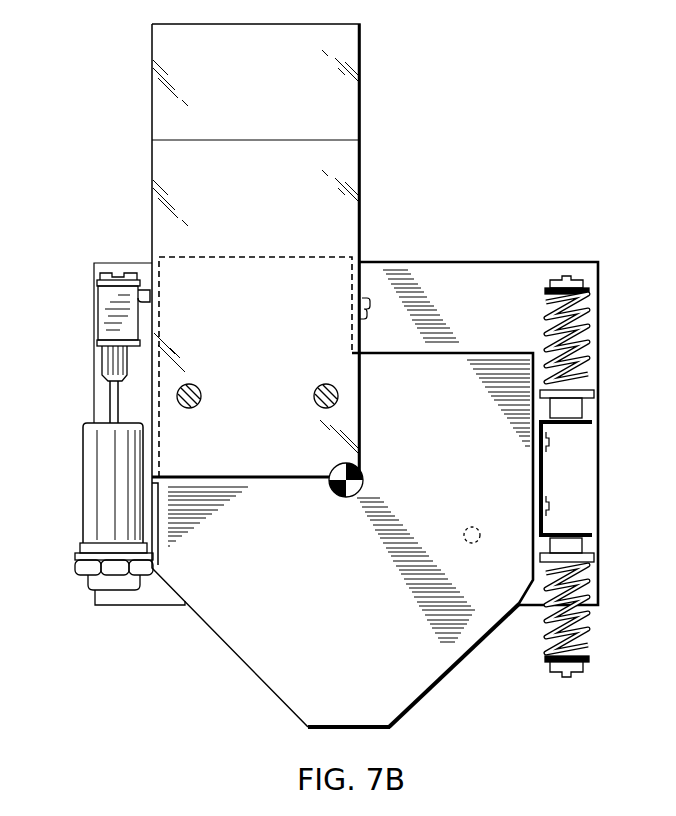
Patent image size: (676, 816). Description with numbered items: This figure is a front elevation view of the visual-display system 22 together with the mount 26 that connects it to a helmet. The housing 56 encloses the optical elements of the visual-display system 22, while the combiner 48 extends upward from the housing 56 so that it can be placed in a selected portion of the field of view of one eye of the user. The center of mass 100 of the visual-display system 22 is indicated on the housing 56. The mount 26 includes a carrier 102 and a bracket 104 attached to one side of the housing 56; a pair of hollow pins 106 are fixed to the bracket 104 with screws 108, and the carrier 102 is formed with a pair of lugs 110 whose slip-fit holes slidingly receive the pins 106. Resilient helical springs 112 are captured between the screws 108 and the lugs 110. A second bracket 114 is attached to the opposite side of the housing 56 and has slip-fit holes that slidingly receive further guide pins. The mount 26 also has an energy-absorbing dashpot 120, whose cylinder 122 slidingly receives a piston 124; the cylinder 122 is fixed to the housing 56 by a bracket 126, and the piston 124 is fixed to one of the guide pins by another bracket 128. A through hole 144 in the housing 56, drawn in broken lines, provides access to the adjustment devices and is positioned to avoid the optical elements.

The visual-display system 22 is at (434, 699).
The mount 26 is at (461, 256).
The combiner 48 is at (152, 105).
The housing 56 is at (240, 658).
The center of mass 100 is at (338, 462).
The carrier 102 is at (530, 262).
The bracket 104 is at (548, 470).
The hollow pins 106 is at (590, 333).
The screws 108 is at (580, 275).
The lugs 110 is at (597, 394).
The helical springs 112 is at (540, 318).
The bracket 114 is at (150, 305).
The dashpot 120 is at (86, 523).
The cylinder 122 is at (93, 455).
The piston 124 is at (98, 359).
The bracket 126 is at (78, 562).
The bracket 128 is at (112, 304).
The hole 144 is at (465, 530).